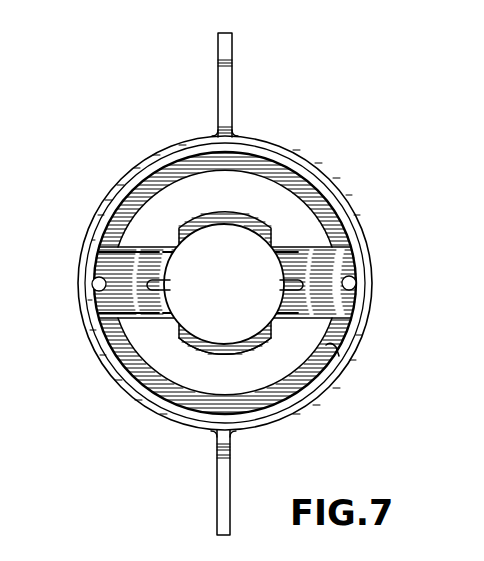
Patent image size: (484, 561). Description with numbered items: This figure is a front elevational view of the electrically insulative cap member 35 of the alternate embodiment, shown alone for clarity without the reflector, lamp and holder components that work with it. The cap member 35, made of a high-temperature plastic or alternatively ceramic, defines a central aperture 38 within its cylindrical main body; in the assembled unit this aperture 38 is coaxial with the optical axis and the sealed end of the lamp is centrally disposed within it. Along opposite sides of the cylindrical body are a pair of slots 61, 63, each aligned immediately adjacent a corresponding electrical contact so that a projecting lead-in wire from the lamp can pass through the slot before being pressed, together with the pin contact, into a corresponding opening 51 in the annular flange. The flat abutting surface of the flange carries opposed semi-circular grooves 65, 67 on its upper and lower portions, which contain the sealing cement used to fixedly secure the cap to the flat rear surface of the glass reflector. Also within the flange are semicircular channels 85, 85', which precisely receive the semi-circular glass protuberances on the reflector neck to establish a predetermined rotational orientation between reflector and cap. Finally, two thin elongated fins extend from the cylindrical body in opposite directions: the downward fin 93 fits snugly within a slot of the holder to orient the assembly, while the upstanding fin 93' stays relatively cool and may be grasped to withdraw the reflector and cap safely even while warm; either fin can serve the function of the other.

The insulative cap member 35 is at (146, 157).
The semi-circular groove 65 is at (301, 182).
The semicircular channel 85 is at (225, 283).
The semicircular channel 85' is at (225, 331).
The aperture 38 is at (238, 279).
The slot 63 is at (173, 292).
The slot 61 is at (275, 292).
The opening 51 is at (92, 280).
The semi-circular groove 67 is at (336, 358).
The fin 93' is at (245, 85).
The fin 93 is at (202, 482).